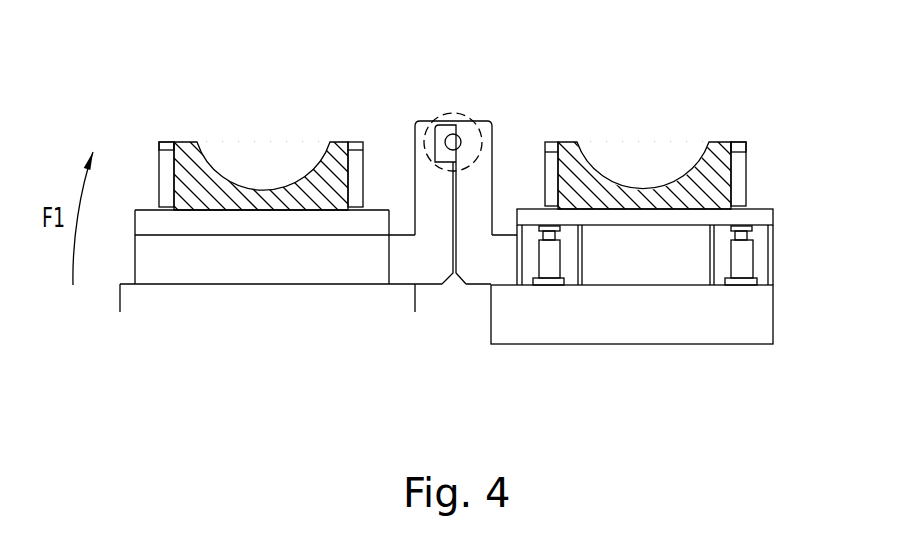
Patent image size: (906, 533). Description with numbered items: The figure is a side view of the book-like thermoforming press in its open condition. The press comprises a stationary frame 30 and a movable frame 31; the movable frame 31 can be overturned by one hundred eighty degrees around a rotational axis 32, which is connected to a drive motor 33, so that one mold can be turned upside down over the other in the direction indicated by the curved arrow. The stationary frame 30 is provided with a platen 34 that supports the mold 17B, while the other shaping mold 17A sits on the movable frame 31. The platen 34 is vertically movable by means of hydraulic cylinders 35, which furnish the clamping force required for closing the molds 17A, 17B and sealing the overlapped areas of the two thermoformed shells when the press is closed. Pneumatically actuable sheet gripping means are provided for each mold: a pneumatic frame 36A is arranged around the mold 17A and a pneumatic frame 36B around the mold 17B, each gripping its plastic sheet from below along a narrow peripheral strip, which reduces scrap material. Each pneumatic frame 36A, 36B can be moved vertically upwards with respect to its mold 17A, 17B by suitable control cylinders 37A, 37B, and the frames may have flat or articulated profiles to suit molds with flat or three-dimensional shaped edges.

The shaping mold 17A is at (187, 150).
The shaping mold 17B is at (725, 147).
The stationary frame 30 is at (713, 333).
The movable frame 31 is at (182, 272).
The rotational axis 32 is at (458, 135).
The drive motor 33 is at (449, 114).
The platen 34 is at (763, 217).
The hydraulic cylinders 35 is at (548, 267).
The pneumatic frame 36A is at (166, 147).
The pneumatic frame 36B is at (738, 147).
The control cylinder 37A is at (742, 173).
The control cylinder 37B is at (167, 167).